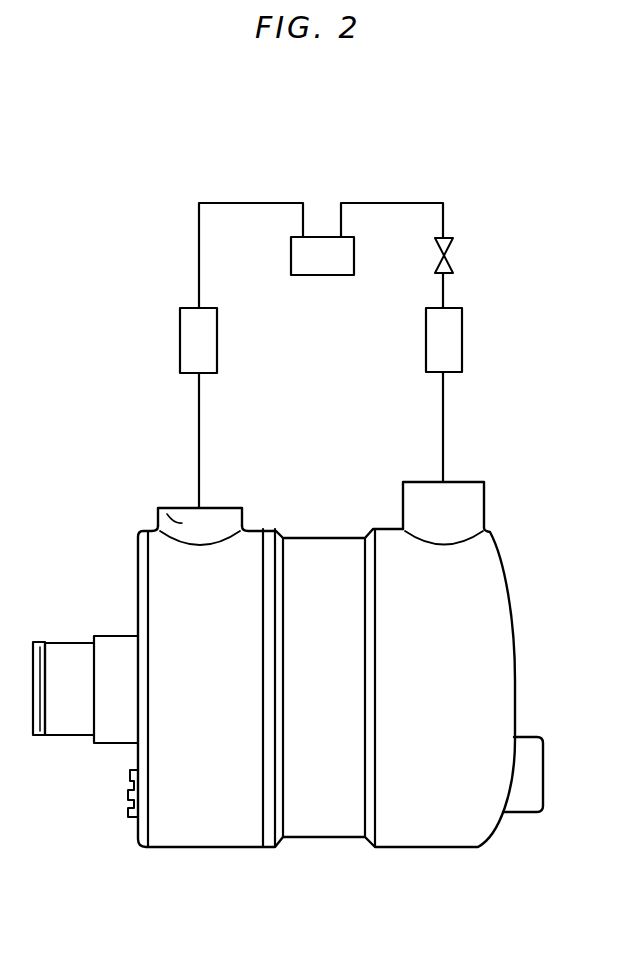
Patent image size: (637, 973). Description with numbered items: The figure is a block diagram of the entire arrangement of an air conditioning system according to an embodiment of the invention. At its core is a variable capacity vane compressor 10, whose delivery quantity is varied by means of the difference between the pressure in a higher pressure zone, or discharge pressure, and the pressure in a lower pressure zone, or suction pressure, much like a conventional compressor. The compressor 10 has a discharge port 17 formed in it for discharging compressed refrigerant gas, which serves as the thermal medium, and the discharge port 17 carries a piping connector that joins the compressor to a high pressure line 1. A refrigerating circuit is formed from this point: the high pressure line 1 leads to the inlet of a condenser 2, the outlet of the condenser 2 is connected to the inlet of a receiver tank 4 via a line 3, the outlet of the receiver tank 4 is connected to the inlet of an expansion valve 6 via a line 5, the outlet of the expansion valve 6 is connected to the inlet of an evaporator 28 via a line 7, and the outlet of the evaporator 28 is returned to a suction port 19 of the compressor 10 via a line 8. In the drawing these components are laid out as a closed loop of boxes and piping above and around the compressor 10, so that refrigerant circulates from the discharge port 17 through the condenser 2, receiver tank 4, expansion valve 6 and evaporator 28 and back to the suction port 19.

The high pressure line 1 is at (199, 439).
The condenser 2 is at (180, 325).
The line 3 is at (218, 203).
The receiver tank 4 is at (354, 258).
The line 5 is at (432, 203).
The expansion valve 6 is at (447, 255).
The line 7 is at (443, 293).
The line 8 is at (443, 423).
The variable capacity vane compressor 10 is at (515, 640).
The discharge port 17 is at (165, 515).
The suction port 19 is at (477, 508).
The evaporator 28 is at (462, 348).